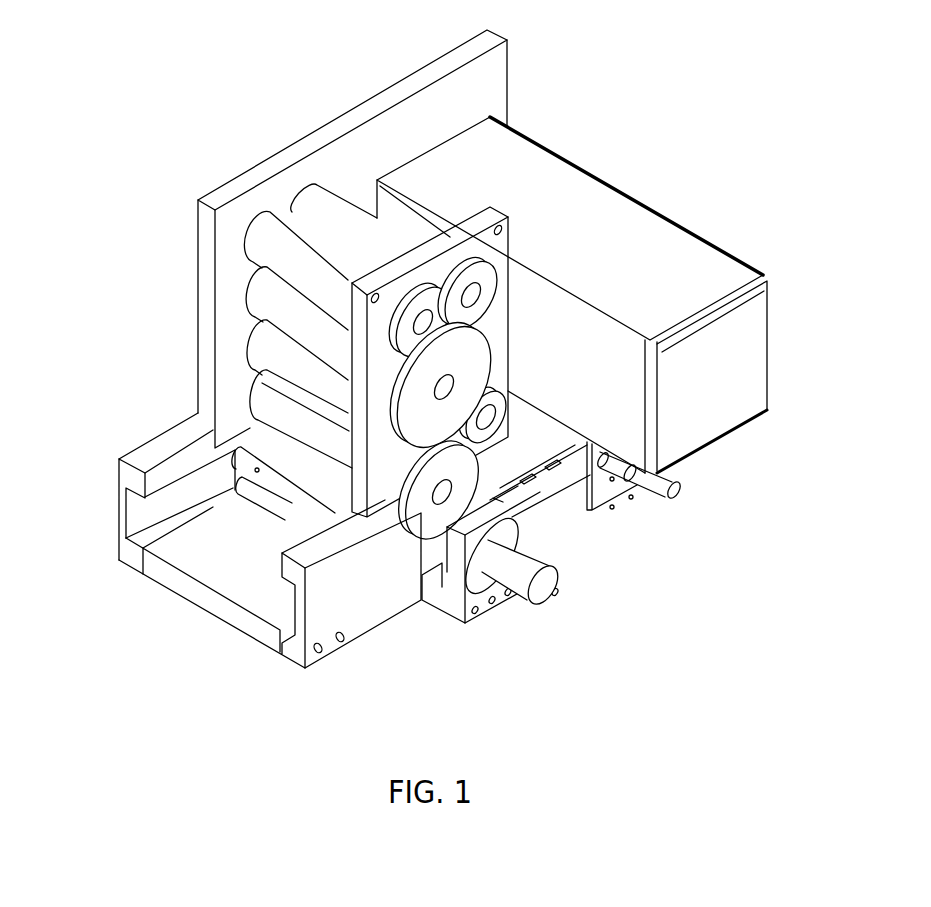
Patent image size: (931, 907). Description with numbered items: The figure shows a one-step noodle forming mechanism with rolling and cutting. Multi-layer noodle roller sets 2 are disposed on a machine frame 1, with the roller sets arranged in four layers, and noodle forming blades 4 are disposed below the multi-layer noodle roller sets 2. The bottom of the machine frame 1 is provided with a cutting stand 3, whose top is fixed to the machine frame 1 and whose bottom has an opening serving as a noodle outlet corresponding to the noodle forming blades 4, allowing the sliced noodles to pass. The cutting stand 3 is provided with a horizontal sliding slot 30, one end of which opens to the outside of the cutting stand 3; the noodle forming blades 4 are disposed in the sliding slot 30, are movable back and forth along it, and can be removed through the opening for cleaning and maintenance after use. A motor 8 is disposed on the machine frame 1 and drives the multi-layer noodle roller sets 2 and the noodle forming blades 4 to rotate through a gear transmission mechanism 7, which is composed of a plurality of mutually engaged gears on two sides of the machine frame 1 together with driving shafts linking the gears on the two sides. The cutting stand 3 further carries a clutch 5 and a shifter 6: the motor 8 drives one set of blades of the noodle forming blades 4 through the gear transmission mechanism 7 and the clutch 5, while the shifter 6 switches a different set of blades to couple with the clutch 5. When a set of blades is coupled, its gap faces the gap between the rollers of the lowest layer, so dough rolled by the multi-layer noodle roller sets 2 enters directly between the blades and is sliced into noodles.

The machine frame 1 is at (388, 150).
The multi-layer noodle roller sets 2 is at (292, 207).
The cutting stand 3 is at (390, 590).
The sliding slot 30 is at (153, 510).
The noodle forming blades 4 is at (288, 489).
The clutch 5 is at (538, 585).
The shifter 6 is at (640, 485).
The gear transmission mechanism 7 is at (495, 395).
The motor 8 is at (600, 207).